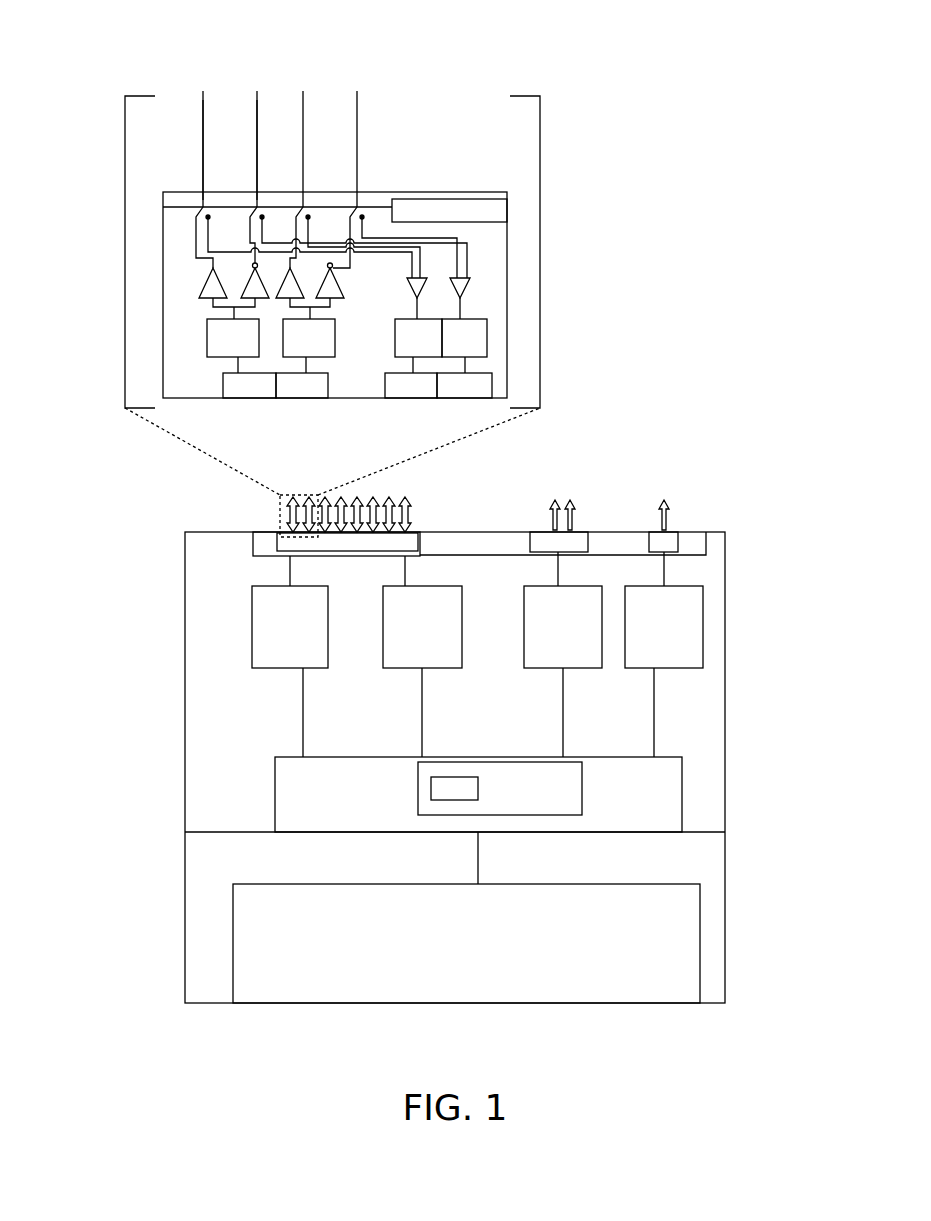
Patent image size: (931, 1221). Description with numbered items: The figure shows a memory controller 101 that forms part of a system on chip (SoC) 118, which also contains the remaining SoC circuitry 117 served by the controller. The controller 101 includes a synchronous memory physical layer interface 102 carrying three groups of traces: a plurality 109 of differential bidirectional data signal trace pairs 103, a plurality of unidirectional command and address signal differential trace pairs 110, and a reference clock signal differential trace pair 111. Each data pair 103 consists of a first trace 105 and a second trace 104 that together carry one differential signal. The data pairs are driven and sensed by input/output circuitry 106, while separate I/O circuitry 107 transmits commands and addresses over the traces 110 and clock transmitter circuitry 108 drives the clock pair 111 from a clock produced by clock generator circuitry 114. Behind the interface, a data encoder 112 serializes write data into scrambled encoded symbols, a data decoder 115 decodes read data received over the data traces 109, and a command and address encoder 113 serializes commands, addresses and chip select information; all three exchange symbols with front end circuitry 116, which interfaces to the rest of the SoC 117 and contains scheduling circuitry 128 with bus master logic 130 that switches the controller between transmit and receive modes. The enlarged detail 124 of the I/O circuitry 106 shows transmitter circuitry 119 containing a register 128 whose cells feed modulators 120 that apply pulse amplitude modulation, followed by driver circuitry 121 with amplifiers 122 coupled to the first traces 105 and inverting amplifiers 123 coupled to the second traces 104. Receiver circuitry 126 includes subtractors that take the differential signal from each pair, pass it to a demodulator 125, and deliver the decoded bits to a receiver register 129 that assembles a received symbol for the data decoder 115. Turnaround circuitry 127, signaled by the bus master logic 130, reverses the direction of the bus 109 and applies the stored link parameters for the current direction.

The memory controller 101 is at (462, 729).
The synchronous memory physical layer interface 102 is at (488, 546).
The differential bidirectional data signal trace pair 103 is at (230, 50).
The second trace 104 is at (257, 102).
The first trace 105 is at (203, 102).
The input/output circuitry 106 is at (422, 193).
The command and address I/O circuitry 107 is at (587, 532).
The clock transmitter circuitry 108 is at (677, 532).
The plurality of differential bidirectional data signal trace pairs 109 is at (337, 488).
The unidirectional command and address signal differential trace pairs 110 is at (560, 482).
The reference clock signal differential trace pair 111 is at (665, 482).
The data encoder 112 is at (269, 638).
The command and address encoder 113 is at (542, 638).
The clock generator circuitry 114 is at (643, 638).
The data decoder 115 is at (401, 638).
The front end circuitry 116 is at (351, 799).
The SoC circuitry 117 is at (372, 956).
The SoC 118 is at (723, 847).
The transmitter circuitry 119 is at (185, 574).
The modulator 120 is at (214, 349).
The driver circuitry 121 is at (218, 515).
The amplifier 122 is at (225, 540).
The inverting amplifier 123 is at (260, 297).
The electrode circuitry 124 is at (497, 303).
The demodulator 125 is at (397, 349).
The receiver circuitry 126 is at (425, 280).
The bus turnaround circuitry 127 is at (431, 221).
The register / scheduling circuitry 128 is at (242, 391).
The receiver register 129 is at (432, 391).
The bus master logic 130 is at (458, 802).